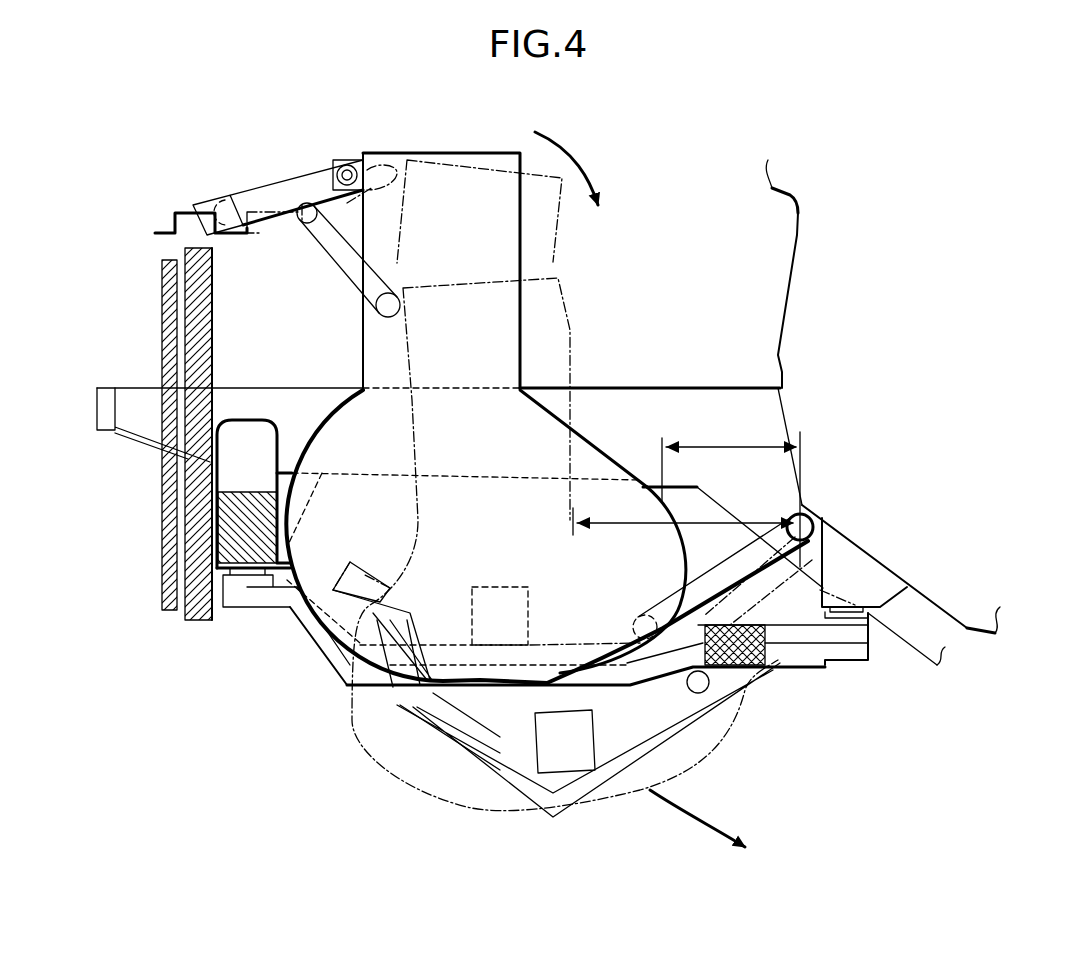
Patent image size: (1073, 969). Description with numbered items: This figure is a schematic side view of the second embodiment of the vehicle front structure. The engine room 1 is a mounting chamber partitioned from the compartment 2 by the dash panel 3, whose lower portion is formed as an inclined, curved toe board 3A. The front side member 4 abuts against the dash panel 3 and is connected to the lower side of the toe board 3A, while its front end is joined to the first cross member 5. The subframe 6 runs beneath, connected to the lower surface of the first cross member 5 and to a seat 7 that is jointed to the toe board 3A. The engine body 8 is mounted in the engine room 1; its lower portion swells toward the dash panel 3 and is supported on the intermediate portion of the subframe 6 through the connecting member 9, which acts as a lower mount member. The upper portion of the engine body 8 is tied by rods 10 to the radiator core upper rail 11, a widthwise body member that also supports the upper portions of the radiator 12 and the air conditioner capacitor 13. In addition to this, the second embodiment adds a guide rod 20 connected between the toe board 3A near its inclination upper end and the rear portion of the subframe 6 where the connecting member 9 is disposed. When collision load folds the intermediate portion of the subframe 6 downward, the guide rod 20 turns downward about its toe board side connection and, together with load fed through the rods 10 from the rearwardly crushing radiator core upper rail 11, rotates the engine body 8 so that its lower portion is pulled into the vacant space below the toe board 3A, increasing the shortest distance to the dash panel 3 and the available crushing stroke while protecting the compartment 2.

The engine room 1 is at (708, 320).
The compartment 2 is at (848, 403).
The dash panel 3 is at (787, 292).
The toe board 3A is at (927, 592).
The front side member 4 is at (274, 386).
The first cross member 5 is at (207, 527).
The subframe 6 is at (312, 656).
The seat 7 is at (858, 560).
The engine body 8 is at (497, 166).
The connecting member 9 is at (497, 582).
The rod 10 is at (330, 206).
The radiator core upper rail 11 is at (173, 211).
The radiator 12 is at (214, 308).
The air conditioner capacitor 13 is at (160, 310).
The guide rod 20 is at (767, 548).